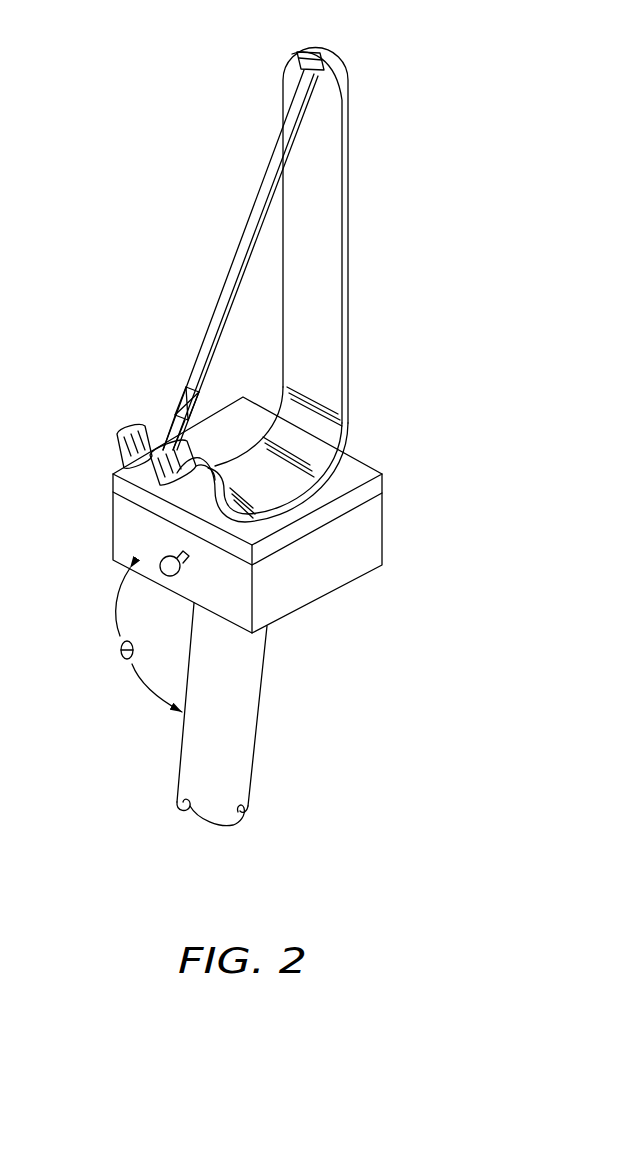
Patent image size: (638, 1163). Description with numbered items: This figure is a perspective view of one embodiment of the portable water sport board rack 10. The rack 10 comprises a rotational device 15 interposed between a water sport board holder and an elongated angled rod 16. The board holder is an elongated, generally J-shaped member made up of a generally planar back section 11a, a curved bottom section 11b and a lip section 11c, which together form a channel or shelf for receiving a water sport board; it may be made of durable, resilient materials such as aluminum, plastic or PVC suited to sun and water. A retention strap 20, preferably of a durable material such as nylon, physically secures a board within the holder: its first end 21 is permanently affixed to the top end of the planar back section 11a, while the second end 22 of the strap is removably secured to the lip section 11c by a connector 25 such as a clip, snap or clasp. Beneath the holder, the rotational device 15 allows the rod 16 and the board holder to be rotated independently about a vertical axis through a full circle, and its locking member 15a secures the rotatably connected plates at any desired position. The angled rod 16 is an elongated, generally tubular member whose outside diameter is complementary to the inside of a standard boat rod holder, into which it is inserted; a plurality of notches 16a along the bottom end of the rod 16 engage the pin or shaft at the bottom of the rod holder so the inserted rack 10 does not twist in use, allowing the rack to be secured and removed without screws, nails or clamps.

The rack 10 is at (142, 95).
The planar back section 11a is at (334, 267).
The curved bottom section 11b is at (282, 487).
The lip section 11c is at (120, 463).
The rotational device 15 is at (353, 547).
The locking member 15a is at (157, 563).
The angled rod 16 is at (238, 750).
The notches 16a is at (243, 817).
The retention strap 20 is at (216, 264).
The first end 21 is at (307, 78).
The second end 22 is at (187, 387).
The connector 25 is at (174, 394).